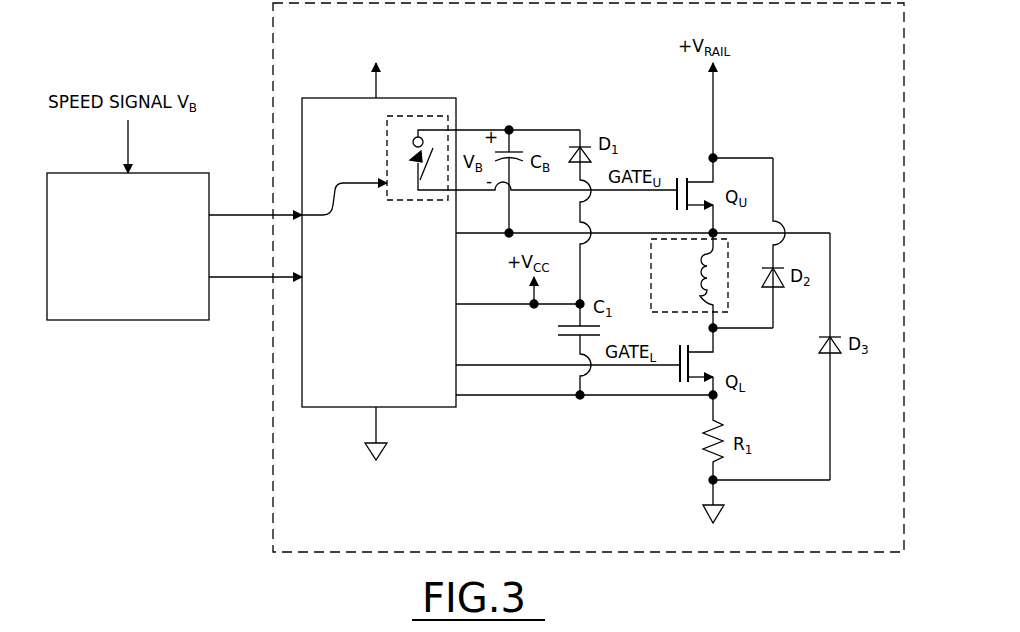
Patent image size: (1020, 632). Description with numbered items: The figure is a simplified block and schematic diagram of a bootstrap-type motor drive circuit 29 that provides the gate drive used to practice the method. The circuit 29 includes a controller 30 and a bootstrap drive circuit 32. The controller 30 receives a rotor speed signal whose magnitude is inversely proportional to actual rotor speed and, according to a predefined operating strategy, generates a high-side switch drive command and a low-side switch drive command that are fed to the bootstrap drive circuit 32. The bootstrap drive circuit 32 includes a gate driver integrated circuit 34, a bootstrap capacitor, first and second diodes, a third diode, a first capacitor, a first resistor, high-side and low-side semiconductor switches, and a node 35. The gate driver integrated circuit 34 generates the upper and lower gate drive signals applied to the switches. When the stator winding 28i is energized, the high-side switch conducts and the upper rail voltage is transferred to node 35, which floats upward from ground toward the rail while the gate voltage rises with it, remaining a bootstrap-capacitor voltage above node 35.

The circuit 29 is at (244, 72).
The controller 30 is at (163, 322).
The bootstrap drive circuit 32 is at (273, 160).
The gate driver integrated circuit 34 is at (440, 97).
The node 35 is at (716, 231).
The stator winding 28i is at (702, 253).